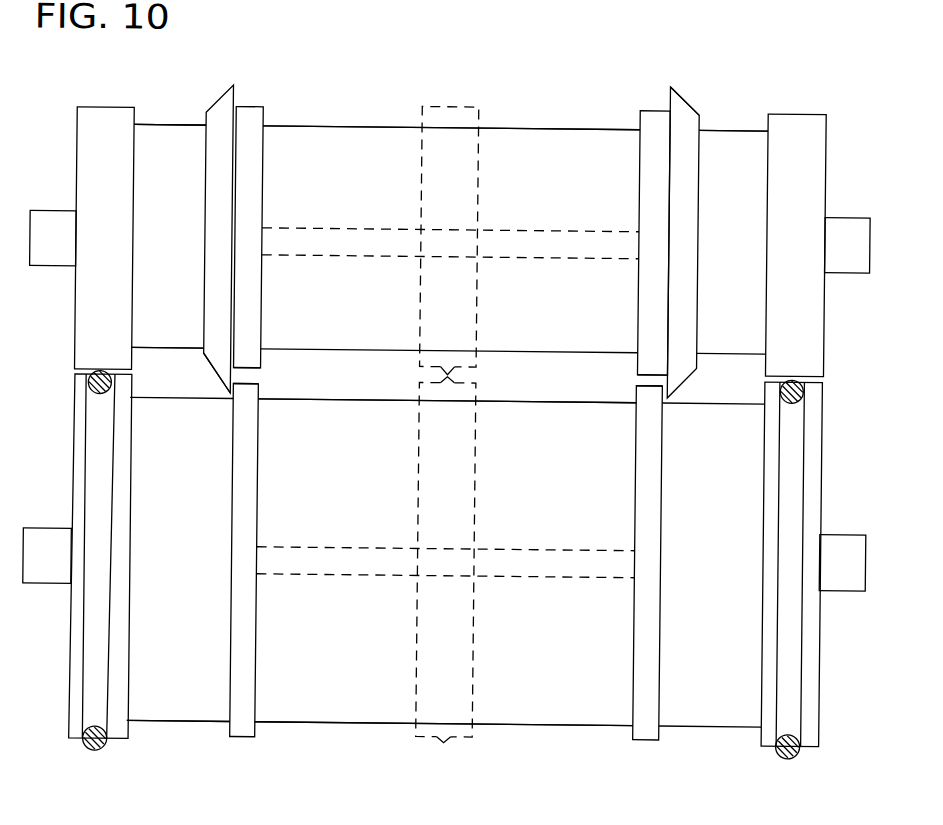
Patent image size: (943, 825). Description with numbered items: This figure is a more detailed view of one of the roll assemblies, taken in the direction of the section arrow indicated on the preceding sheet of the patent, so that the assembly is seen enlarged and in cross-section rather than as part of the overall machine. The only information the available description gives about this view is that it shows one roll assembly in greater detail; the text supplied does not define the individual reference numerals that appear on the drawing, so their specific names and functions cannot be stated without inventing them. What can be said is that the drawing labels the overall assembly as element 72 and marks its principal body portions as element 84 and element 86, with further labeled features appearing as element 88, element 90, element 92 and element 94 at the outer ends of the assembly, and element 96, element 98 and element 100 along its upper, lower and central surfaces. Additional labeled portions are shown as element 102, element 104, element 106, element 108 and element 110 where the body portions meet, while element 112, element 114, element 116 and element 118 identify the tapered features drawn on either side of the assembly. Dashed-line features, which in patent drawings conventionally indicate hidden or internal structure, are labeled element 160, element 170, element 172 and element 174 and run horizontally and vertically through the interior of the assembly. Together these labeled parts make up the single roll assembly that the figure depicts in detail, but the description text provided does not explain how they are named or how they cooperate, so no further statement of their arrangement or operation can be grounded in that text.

The connector assembly 72 is at (534, 102).
The lower housing half 84 is at (353, 726).
The upper housing half 86 is at (344, 126).
The axle pin 88 is at (48, 220).
The right roller 90 is at (764, 749).
The end block 92 is at (100, 116).
The left roller 94 is at (98, 757).
The bottom surface 96 is at (551, 726).
The top surface 98 is at (492, 127).
The parting line 100 is at (504, 382).
The lower flange 102 is at (234, 730).
The lower rib 104 is at (243, 740).
The upper shoulder 106 is at (258, 126).
The upper rib 108 is at (241, 108).
The gap 110 is at (246, 378).
The right latch wedge 112 is at (710, 107).
The left latch wedge 114 is at (219, 100).
The wedge tip 116 is at (202, 358).
The wedge edge 118 is at (680, 78).
The passage 160 is at (384, 257).
The lower channel 170 is at (475, 508).
The upper channel 172 is at (480, 200).
The central channel 174 is at (453, 102).